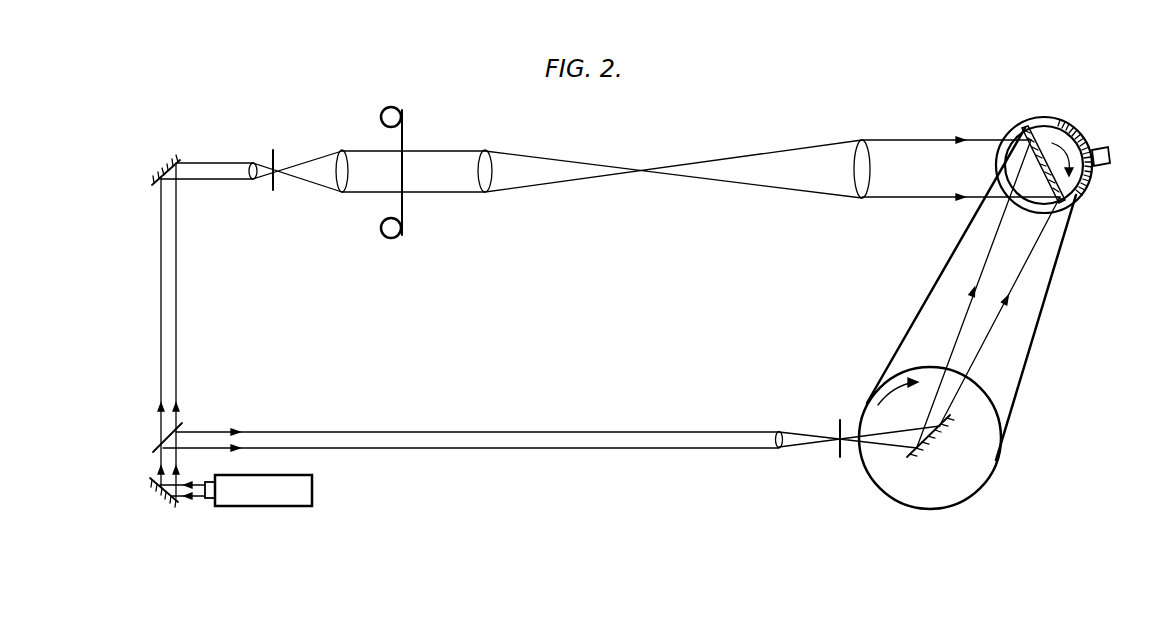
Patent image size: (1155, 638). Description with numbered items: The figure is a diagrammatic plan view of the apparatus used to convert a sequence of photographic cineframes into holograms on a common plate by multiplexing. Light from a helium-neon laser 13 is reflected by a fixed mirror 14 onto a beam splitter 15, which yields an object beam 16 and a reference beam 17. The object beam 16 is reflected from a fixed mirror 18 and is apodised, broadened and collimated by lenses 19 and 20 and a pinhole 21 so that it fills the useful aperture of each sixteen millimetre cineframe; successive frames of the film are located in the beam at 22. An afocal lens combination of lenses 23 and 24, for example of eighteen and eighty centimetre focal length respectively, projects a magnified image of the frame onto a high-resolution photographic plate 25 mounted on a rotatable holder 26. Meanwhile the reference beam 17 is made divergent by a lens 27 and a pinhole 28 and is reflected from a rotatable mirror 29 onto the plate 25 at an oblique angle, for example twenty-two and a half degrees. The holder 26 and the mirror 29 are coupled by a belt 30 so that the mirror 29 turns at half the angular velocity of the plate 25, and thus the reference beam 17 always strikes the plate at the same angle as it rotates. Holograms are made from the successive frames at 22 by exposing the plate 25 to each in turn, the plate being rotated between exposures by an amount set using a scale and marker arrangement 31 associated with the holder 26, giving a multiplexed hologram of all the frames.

The helium-neon laser 13 is at (286, 507).
The fixed mirror 14 is at (179, 501).
The beam splitter 15 is at (158, 445).
The object beam 16 is at (177, 340).
The reference beam 17 is at (366, 432).
The fixed mirror 18 is at (158, 174).
The lens 19 is at (253, 181).
The lens 20 is at (342, 191).
The pinhole 21 is at (272, 165).
The film frame location 22 is at (402, 172).
The lens 23 is at (487, 186).
The lens 24 is at (856, 181).
The photographic plate 25 is at (1026, 125).
The rotatable holder 26 is at (1066, 183).
The lens 27 is at (783, 432).
The pinhole 28 is at (838, 442).
The rotatable mirror 29 is at (932, 447).
The belt 30 is at (1033, 340).
The scale and marker arrangement 31 is at (1099, 152).